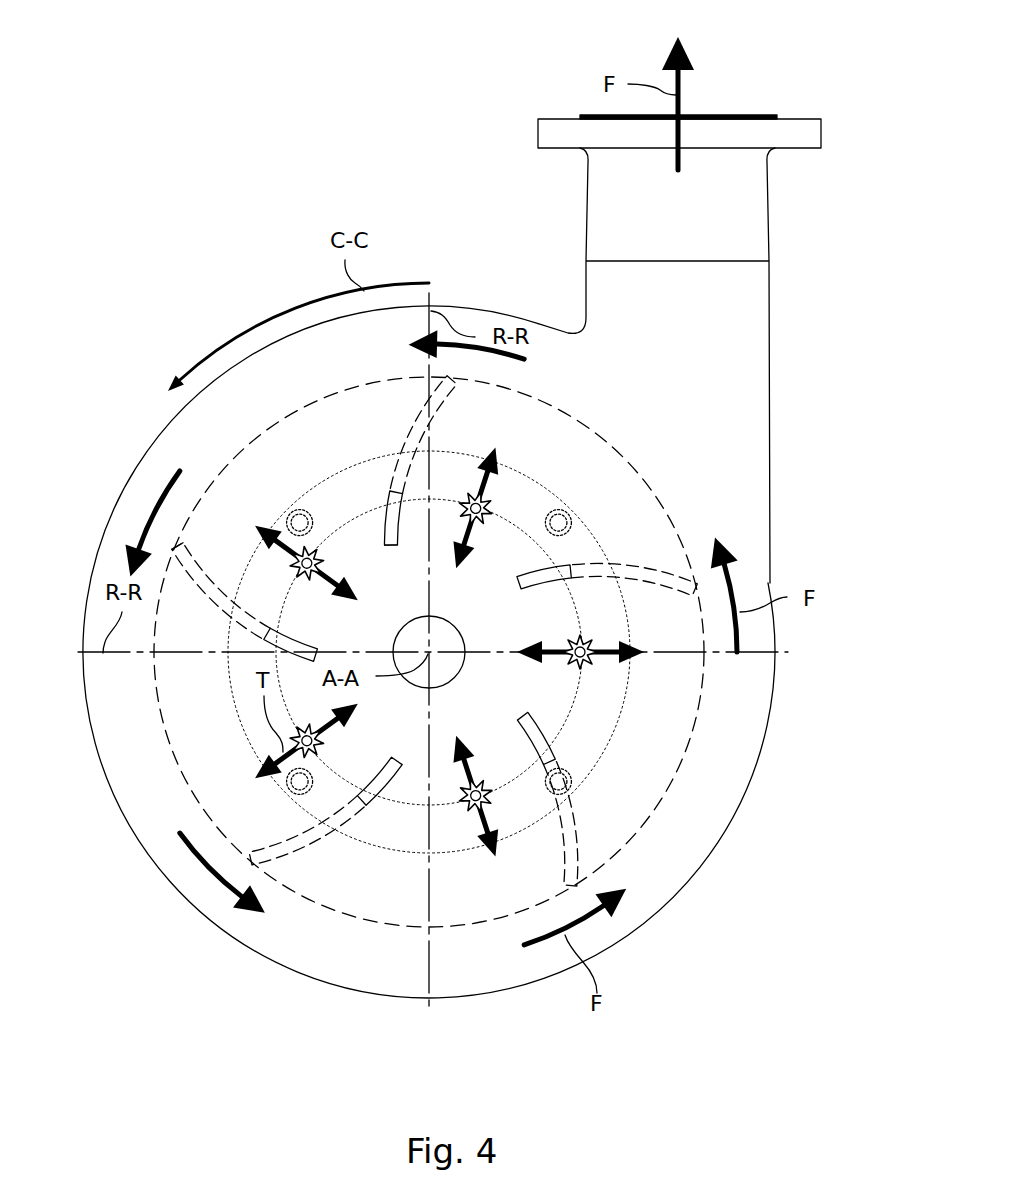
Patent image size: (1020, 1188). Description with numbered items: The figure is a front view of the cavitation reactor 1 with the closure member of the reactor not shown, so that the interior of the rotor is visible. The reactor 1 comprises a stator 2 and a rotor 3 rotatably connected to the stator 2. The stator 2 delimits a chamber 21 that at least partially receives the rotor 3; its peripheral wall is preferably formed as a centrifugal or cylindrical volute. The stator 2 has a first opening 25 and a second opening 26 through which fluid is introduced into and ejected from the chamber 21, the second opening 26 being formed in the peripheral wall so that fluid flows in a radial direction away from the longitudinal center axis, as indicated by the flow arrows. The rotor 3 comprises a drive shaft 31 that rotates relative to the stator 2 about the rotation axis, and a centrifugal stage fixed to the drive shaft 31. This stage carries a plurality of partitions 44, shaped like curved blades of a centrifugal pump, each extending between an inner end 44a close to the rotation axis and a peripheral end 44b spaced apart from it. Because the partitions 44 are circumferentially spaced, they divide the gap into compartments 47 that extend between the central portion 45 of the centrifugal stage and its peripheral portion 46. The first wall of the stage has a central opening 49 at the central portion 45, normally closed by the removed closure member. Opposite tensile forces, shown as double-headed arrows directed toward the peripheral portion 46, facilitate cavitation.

The cavitation reactor 1 is at (242, 182).
The stator 2 is at (773, 503).
The rotor 3 is at (160, 717).
The chamber 21 is at (482, 968).
The first opening 25 is at (362, 848).
The second opening 26 is at (735, 118).
The drive shaft 31 is at (460, 673).
The partition 44 is at (205, 560).
The inner end 44a is at (395, 545).
The peripheral end 44b is at (177, 537).
The central portion 45 is at (420, 722).
The peripheral portion 46 is at (466, 890).
The compartment 47 is at (350, 418).
The central opening 49 is at (567, 727).